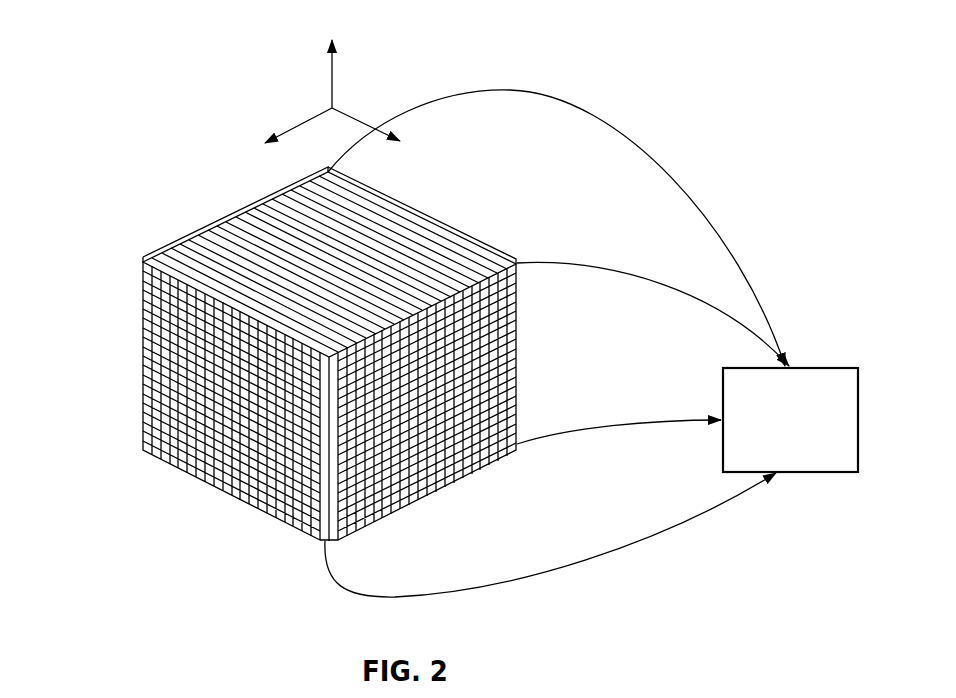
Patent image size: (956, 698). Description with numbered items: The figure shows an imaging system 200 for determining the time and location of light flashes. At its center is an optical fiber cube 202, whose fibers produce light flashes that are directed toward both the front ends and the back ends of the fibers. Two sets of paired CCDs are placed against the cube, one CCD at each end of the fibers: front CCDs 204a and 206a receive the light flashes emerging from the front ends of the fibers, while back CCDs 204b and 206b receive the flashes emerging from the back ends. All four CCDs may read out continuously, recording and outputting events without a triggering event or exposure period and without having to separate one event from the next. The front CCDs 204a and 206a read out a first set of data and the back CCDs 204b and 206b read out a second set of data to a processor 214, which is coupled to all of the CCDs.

The imaging system 200 is at (137, 120).
The optical fiber cube 202 is at (457, 274).
The front CCD 204a is at (150, 420).
The back CCD 204b is at (508, 255).
The front CCD 206a is at (505, 406).
The back CCD 206b is at (150, 254).
The processor 214 is at (771, 429).